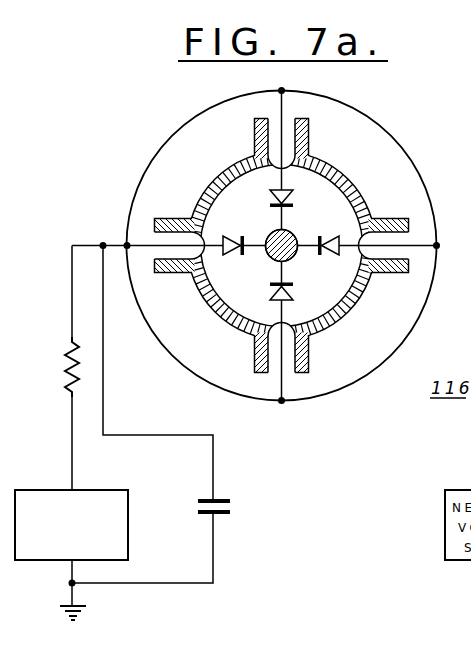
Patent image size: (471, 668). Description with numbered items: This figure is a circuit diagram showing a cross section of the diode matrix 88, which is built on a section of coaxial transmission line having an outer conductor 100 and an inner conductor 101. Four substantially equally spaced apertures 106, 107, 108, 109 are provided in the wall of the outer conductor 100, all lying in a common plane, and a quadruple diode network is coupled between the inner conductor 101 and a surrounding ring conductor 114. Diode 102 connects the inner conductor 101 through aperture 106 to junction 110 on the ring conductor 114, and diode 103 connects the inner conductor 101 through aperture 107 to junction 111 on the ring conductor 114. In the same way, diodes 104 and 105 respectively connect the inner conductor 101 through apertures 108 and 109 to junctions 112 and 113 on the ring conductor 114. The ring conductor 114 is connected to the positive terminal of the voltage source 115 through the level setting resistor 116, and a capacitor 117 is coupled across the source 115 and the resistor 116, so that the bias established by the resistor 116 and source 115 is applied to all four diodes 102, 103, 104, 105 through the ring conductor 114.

The diode matrix 88 is at (432, 109).
The outer conductor 100 is at (349, 179).
The inner conductor 101 is at (298, 237).
The diode 102 is at (236, 258).
The diode 103 is at (270, 192).
The diode 104 is at (326, 258).
The diode 105 is at (290, 295).
The aperture 106 is at (174, 220).
The aperture 107 is at (308, 125).
The aperture 108 is at (392, 274).
The aperture 109 is at (310, 358).
The junction 110 is at (126, 242).
The junction 111 is at (279, 89).
The junction 112 is at (438, 243).
The junction 113 is at (285, 403).
The ring conductor 114 is at (152, 330).
The voltage source 115 is at (118, 490).
The level setting resistor 116 is at (64, 346).
The capacitor 117 is at (232, 511).